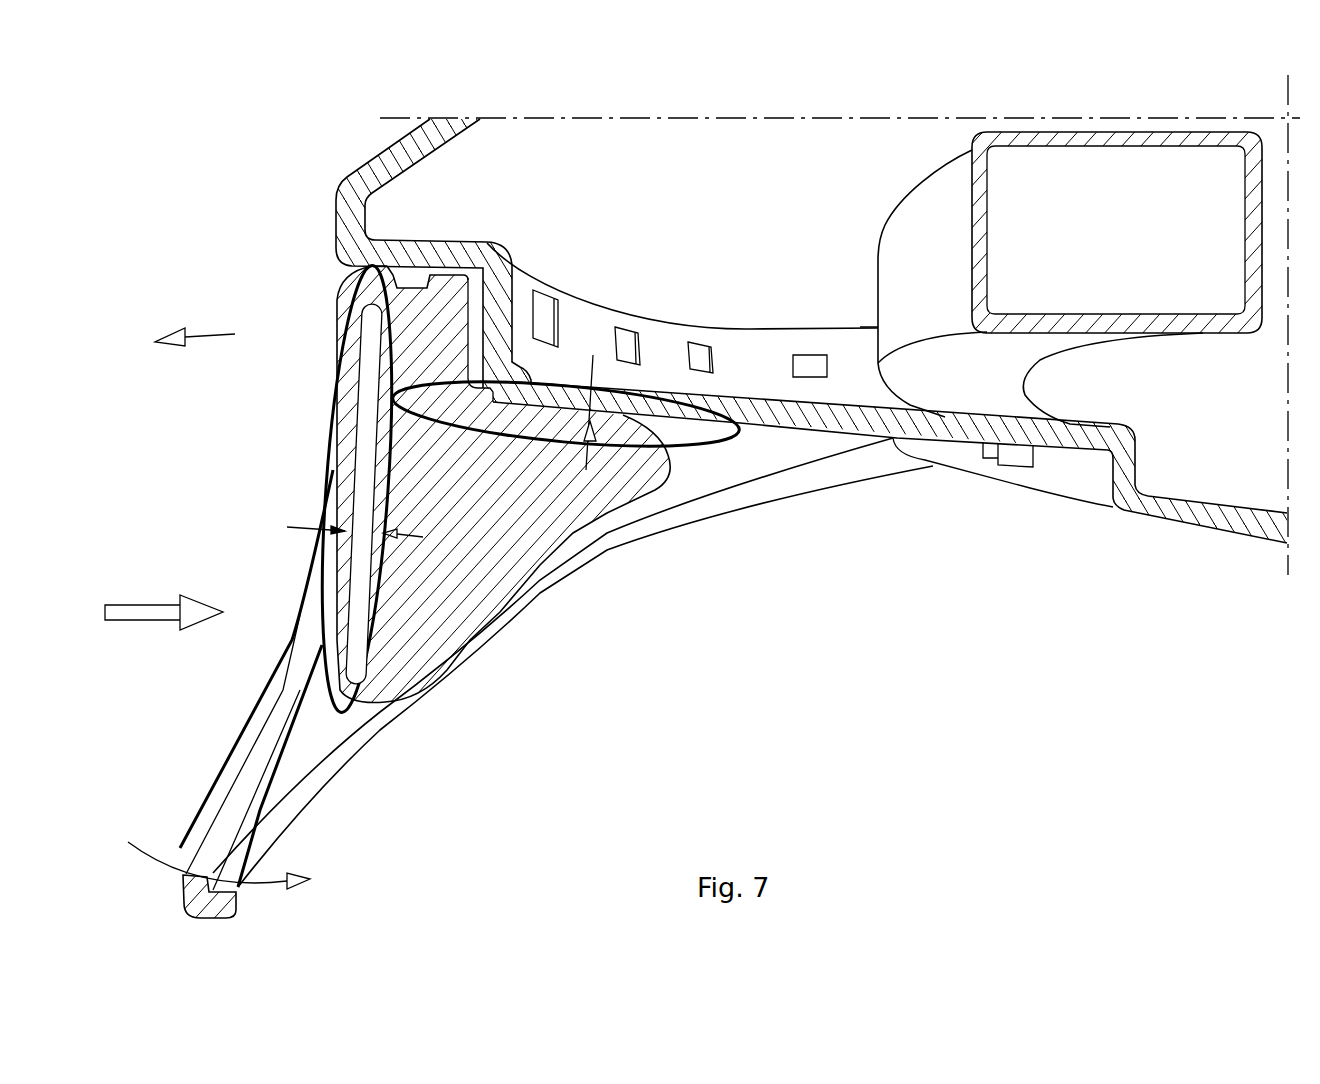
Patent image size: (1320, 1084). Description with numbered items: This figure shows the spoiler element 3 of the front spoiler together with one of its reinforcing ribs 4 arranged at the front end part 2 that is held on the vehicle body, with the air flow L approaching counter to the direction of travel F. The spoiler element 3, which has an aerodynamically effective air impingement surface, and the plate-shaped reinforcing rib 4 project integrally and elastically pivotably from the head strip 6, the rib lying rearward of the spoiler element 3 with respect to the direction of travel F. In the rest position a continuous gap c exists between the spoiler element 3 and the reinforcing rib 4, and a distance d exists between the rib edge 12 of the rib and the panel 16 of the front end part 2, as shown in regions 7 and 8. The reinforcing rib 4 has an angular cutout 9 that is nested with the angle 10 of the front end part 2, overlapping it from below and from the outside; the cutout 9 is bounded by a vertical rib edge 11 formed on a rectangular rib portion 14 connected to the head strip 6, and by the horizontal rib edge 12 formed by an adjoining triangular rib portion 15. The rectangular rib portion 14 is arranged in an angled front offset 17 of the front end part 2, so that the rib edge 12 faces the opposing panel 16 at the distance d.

The front end part 2 is at (1177, 513).
The spoiler element 3 is at (278, 733).
The reinforcing ribs 4 is at (417, 630).
The head strip 6 is at (348, 298).
The region 7 is at (397, 477).
The region 8 is at (567, 452).
The angular cutout 9 is at (493, 416).
The angle 10 is at (522, 348).
The vertical rib edge 11 is at (467, 337).
The horizontal rib edge 12 is at (547, 417).
The rectangular rib portion 14 is at (408, 357).
The triangular rib portion 15 is at (463, 592).
The panel 16 is at (620, 405).
The angled front offset 17 is at (484, 237).
The direction of travel F is at (205, 335).
The air flow L is at (130, 613).
The continuous gap c is at (355, 518).
The distance d is at (584, 410).